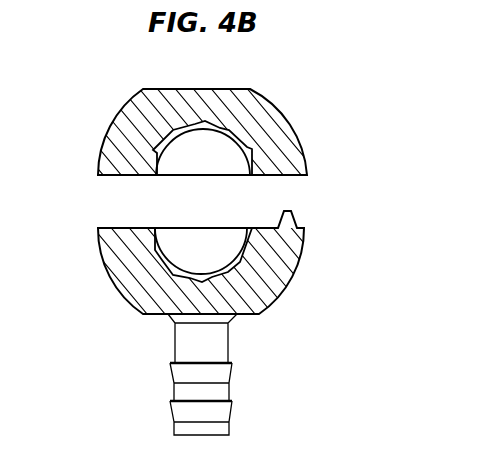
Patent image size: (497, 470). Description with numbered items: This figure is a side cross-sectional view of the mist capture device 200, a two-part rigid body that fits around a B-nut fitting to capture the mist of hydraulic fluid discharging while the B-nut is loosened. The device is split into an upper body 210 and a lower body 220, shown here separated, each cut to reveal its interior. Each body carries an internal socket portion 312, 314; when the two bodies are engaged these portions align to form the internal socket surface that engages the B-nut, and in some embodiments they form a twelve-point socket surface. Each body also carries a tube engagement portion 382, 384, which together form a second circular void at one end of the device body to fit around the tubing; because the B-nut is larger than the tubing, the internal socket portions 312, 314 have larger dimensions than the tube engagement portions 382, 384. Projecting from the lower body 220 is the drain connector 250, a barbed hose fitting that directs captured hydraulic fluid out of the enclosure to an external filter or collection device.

The mist capture device 200 is at (362, 123).
The upper body 210 is at (248, 191).
The lower body 220 is at (248, 207).
The internal socket portion 312 is at (221, 127).
The internal socket portion 314 is at (242, 265).
The tube engagement portion 382 is at (201, 134).
The tube engagement portion 384 is at (203, 270).
The drain connector 250 is at (232, 391).